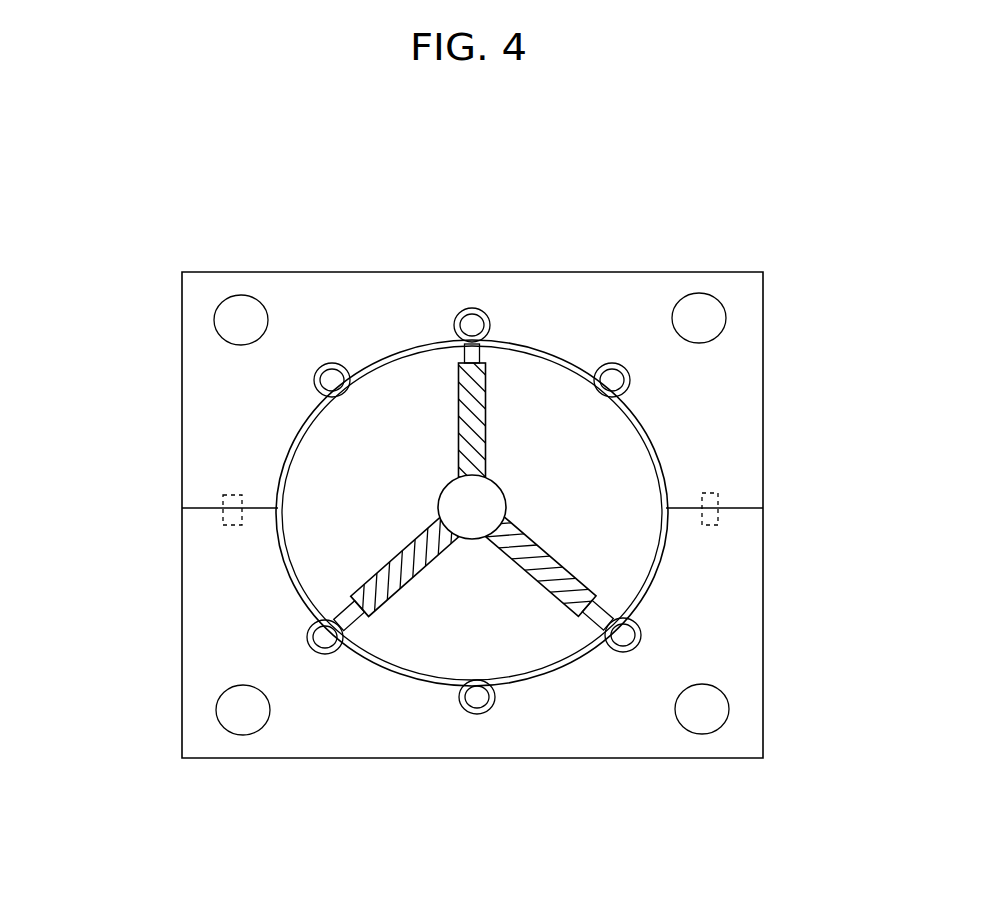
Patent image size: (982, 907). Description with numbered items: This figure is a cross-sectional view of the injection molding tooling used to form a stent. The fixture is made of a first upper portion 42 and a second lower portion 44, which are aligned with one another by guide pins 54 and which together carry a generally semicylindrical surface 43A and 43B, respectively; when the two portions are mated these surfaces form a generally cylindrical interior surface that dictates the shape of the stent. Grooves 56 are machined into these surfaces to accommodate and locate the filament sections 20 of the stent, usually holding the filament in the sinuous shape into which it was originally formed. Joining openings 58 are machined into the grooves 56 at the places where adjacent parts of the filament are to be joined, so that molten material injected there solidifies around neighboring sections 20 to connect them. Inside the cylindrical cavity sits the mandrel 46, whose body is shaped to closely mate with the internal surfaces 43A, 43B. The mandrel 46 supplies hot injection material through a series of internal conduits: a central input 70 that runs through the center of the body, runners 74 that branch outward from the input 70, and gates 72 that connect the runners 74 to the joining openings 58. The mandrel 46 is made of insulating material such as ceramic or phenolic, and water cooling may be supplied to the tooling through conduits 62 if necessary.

The sections 20 is at (487, 327).
The first upper portion 42 is at (747, 432).
The semicylindrical surface 43A is at (652, 433).
The semicylindrical surface 43B is at (660, 567).
The second lower portion 44 is at (743, 630).
The mandrel 46 is at (317, 462).
The guide pins 54 is at (223, 528).
The grooves 56 is at (322, 365).
The joining openings 58 is at (470, 320).
The conduits 62 is at (223, 298).
The input 70 is at (487, 522).
The gates 72 is at (595, 623).
The runners 74 is at (460, 400).